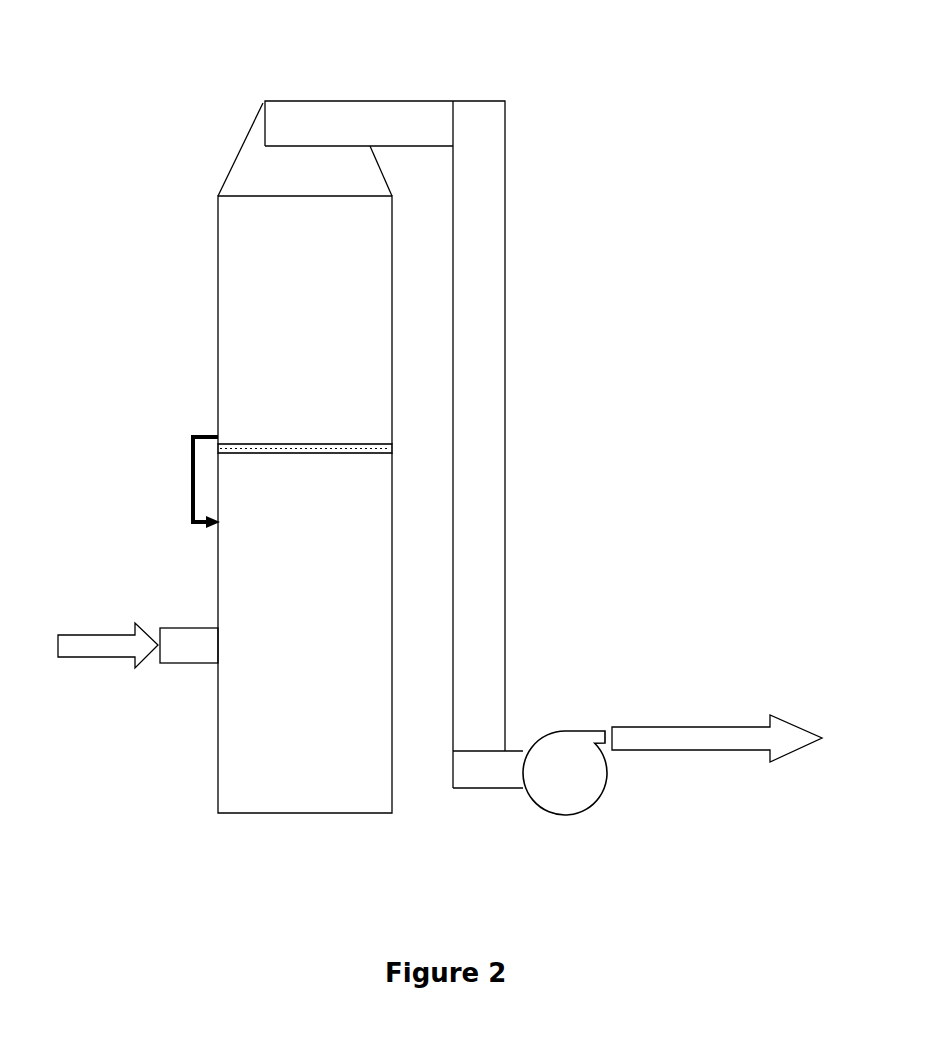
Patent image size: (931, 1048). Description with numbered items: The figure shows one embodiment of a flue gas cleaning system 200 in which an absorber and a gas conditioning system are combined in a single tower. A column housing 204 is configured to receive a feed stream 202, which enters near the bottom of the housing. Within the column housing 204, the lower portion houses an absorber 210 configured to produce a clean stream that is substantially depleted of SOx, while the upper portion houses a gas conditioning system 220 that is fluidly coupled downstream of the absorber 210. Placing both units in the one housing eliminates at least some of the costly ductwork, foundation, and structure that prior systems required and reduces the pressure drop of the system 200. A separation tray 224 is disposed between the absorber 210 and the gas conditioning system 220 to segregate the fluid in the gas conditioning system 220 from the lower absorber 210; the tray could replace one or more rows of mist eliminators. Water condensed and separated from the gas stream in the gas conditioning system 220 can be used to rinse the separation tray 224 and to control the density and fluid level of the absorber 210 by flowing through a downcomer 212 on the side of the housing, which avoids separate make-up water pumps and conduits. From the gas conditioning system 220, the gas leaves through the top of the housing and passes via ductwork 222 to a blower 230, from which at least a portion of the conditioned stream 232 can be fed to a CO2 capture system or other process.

The flue gas cleaning system 200 is at (679, 118).
The feed stream 202 is at (136, 656).
The column housing 204 is at (218, 313).
The absorber 210 is at (305, 633).
The downcomer 212 is at (176, 451).
The gas conditioning system 220 is at (305, 320).
The ductwork 222 is at (506, 278).
The separation tray 224 is at (305, 418).
The blower 230 is at (565, 773).
The conditioned stream 232 is at (728, 749).